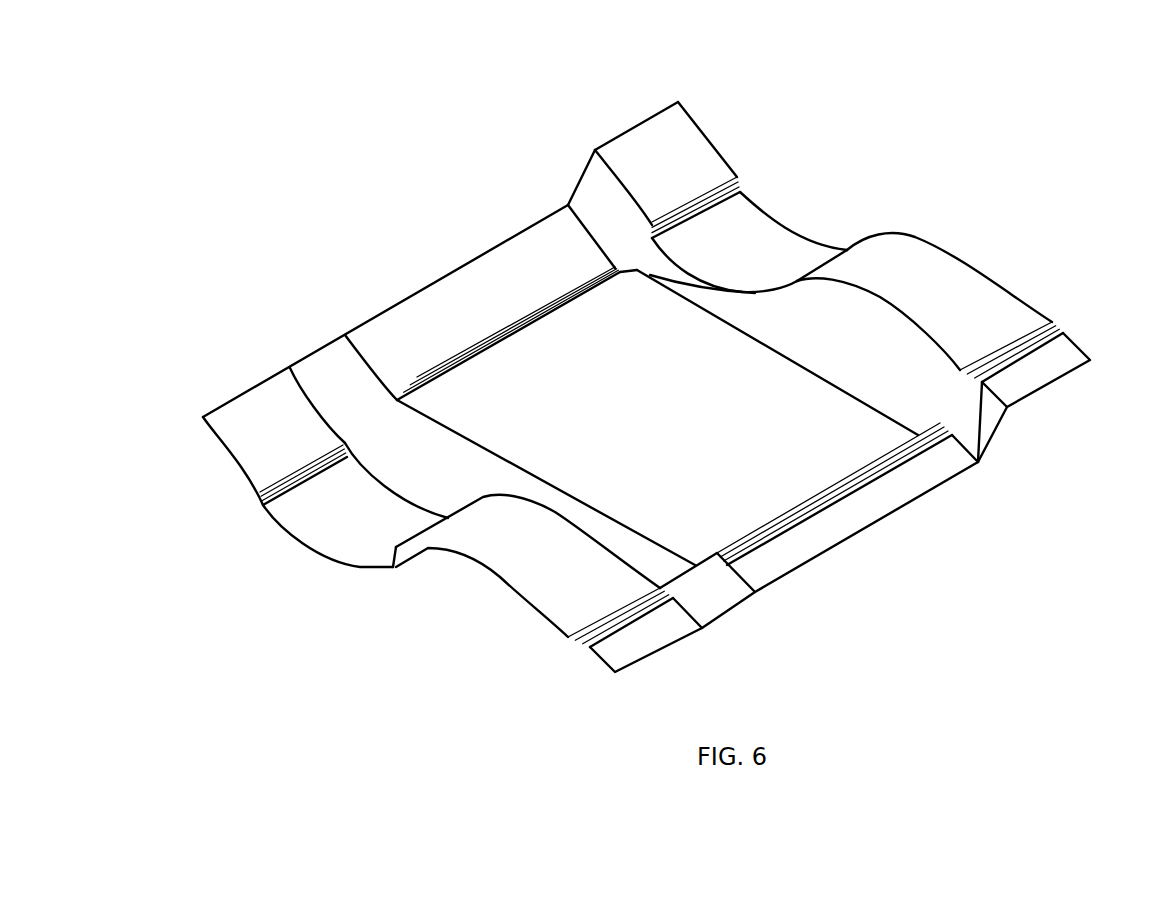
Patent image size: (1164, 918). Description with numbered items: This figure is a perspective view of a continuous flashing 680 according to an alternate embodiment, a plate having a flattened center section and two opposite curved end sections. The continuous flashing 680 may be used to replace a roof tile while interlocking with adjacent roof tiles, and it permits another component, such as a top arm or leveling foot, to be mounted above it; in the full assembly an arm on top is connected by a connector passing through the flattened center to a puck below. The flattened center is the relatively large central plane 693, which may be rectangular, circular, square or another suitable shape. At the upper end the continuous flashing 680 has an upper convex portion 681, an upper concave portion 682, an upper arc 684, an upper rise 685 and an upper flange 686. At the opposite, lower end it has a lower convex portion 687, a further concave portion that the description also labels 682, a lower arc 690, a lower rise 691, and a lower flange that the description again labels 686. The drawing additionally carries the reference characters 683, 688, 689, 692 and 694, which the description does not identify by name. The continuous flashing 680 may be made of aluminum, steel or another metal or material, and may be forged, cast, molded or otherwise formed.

The continuous flashing 680 is at (796, 97).
The upper convex portion 681 is at (787, 227).
The upper concave portion 682 is at (977, 257).
The bend 683 is at (588, 202).
The upper arc 684 is at (718, 148).
The upper rise 685 is at (1050, 317).
The upper flange 686 is at (1093, 352).
The lower convex portion 687 is at (347, 563).
The arched flange 688 is at (500, 578).
The transition wall 689 is at (393, 475).
The lower arc 690 is at (240, 463).
The lower rise 691 is at (568, 638).
The bottom tab 692 is at (598, 664).
The central plane 693 is at (629, 367).
The rolled edge 694 is at (420, 377).